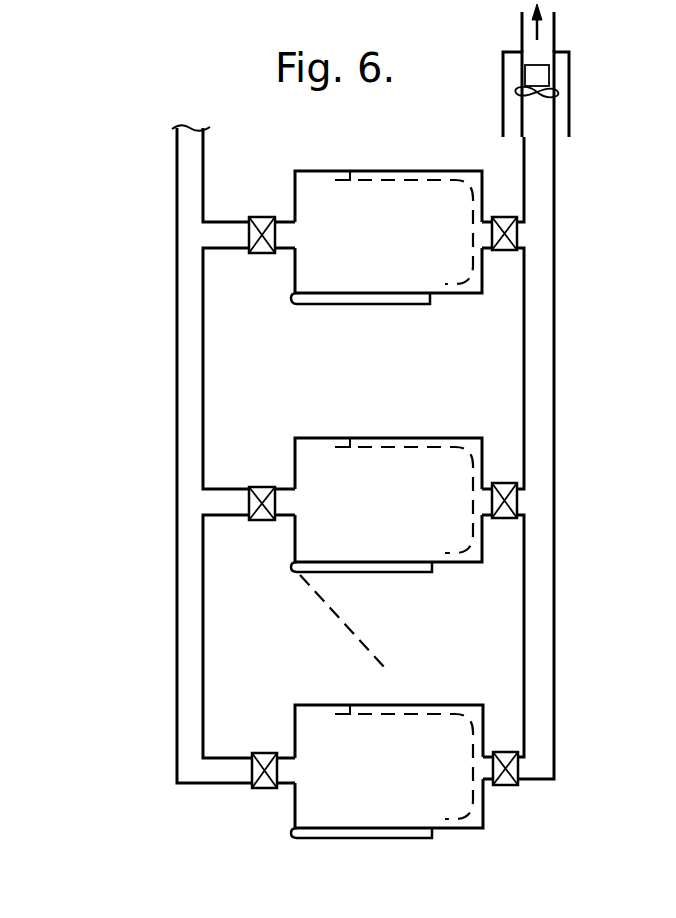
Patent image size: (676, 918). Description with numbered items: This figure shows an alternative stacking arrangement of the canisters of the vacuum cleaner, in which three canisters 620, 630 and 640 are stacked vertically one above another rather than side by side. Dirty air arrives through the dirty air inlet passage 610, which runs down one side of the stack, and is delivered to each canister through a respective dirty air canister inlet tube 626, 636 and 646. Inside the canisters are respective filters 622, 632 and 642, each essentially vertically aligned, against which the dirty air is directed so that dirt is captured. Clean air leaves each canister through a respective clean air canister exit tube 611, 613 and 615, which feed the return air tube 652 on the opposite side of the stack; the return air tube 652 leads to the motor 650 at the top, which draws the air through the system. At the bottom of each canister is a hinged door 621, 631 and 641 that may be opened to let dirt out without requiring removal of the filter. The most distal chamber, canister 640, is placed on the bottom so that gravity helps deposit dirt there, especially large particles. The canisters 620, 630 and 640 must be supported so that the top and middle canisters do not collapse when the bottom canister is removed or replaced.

The dirty air inlet passage 610 is at (183, 366).
The clean air canister exit tube 611 is at (519, 233).
The clean air canister exit tube 613 is at (522, 498).
The clean air canister exit tube 615 is at (527, 762).
The canister 620 is at (405, 249).
The hinged door 621 is at (383, 305).
The filter 622 is at (348, 170).
The dirty air canister inlet tube 626 is at (228, 230).
The canister 630 is at (405, 505).
The hinged door 631 is at (400, 572).
The filter 632 is at (345, 440).
The dirty air canister inlet tube 636 is at (215, 512).
The canister 640 is at (408, 785).
The hinged door 641 is at (373, 840).
The filter 642 is at (348, 707).
The dirty air canister inlet tube 646 is at (230, 778).
The motor 650 is at (560, 120).
The return air tube 652 is at (545, 418).